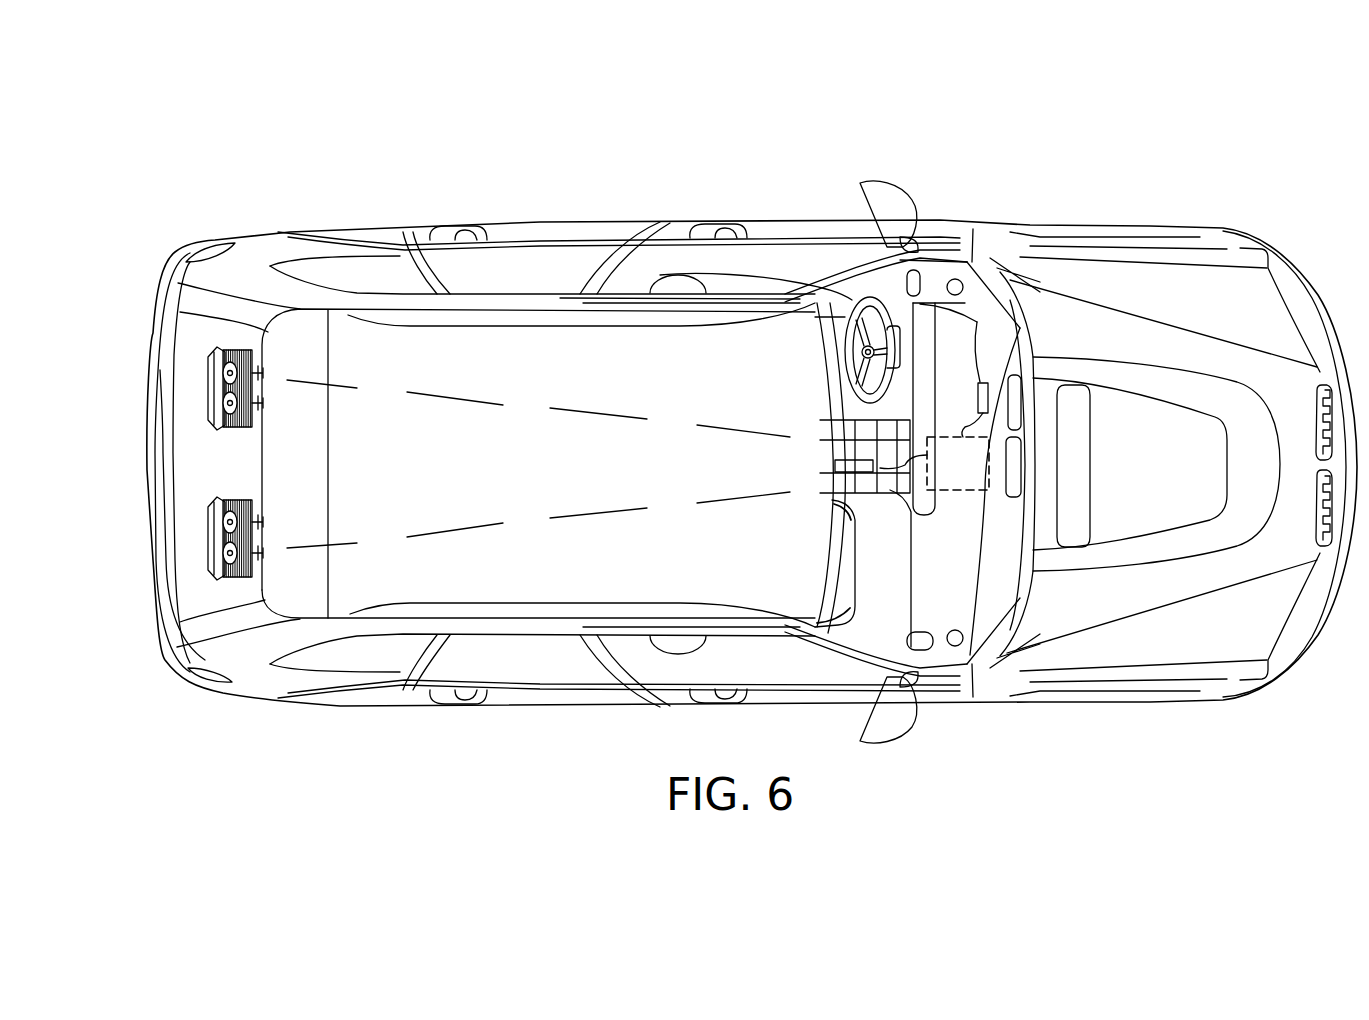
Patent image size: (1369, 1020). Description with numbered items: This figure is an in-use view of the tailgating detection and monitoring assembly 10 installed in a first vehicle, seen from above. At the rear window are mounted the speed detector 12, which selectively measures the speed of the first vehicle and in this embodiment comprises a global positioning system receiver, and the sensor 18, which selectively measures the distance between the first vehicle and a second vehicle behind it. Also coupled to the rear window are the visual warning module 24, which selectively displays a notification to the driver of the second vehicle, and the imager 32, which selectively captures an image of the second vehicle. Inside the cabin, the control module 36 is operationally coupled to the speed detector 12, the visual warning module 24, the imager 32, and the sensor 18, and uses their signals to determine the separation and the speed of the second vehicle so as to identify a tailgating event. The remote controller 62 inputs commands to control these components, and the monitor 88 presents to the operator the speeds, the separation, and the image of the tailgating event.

The tailgating detection and monitoring assembly 10 is at (490, 150).
The speed detector 12 is at (212, 407).
The sensor 18 is at (212, 557).
The visual warning module 24 is at (212, 373).
The imager 32 is at (213, 520).
The control module 36 is at (946, 437).
The remote controller 62 is at (838, 437).
The monitor 88 is at (977, 320).